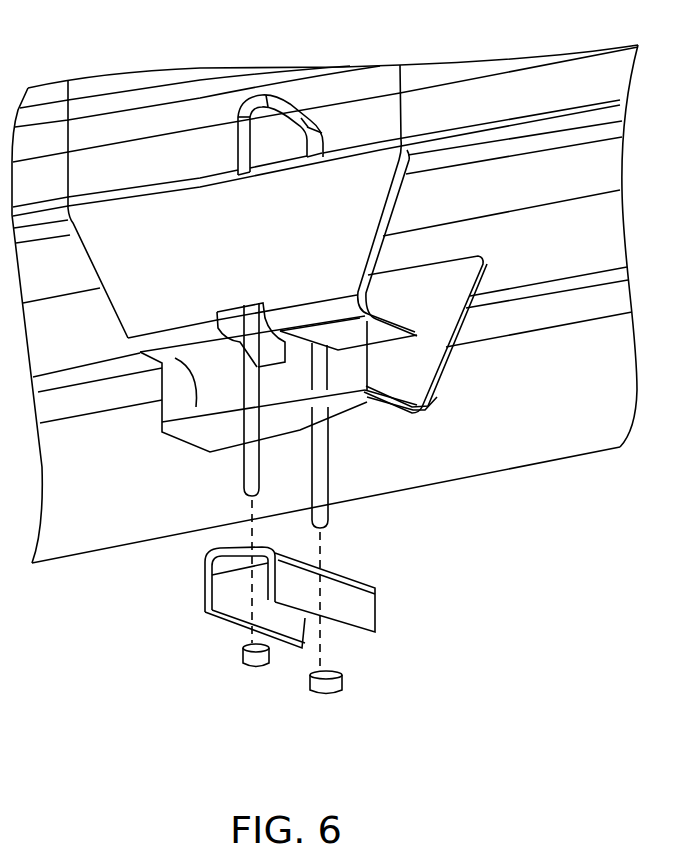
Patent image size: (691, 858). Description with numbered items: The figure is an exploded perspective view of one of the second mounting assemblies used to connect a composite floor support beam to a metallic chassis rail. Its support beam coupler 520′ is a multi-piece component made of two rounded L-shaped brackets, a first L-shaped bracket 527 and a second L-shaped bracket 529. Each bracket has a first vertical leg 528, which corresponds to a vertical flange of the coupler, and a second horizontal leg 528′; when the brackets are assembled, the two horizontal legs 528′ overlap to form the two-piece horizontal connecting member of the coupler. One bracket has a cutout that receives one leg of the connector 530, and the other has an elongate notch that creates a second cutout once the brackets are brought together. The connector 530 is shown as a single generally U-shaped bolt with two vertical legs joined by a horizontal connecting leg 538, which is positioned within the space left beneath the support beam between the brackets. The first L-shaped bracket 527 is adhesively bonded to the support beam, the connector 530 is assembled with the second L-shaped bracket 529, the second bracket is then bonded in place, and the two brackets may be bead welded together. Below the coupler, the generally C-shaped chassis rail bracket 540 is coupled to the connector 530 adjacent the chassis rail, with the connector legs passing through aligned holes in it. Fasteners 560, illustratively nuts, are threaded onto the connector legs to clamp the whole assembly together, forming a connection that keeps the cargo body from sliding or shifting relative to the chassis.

The support beam coupler 520′ is at (470, 321).
The horizontal connecting leg 538 is at (290, 110).
The first vertical leg 528 is at (112, 255).
The second horizontal leg 528′ is at (180, 358).
The first L-shaped bracket 527 is at (418, 330).
The second L-shaped bracket 529 is at (398, 417).
The connector 530 is at (322, 460).
The chassis rail bracket 540 is at (367, 608).
The fasteners 560 is at (258, 657).